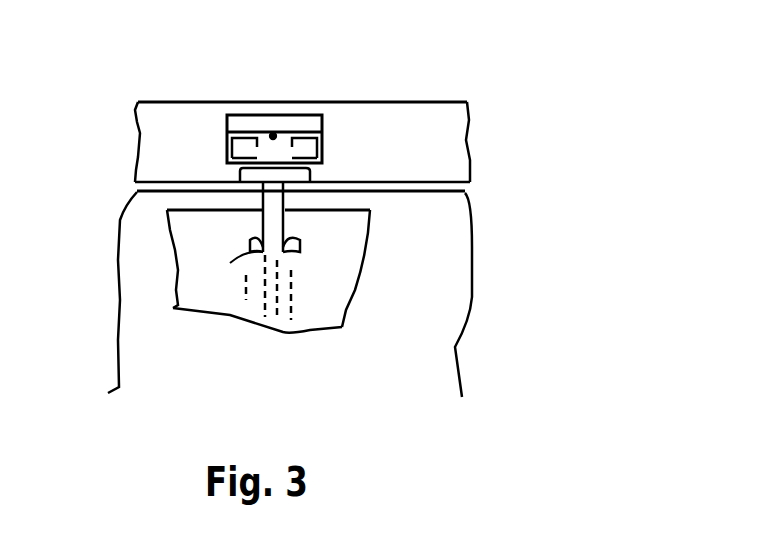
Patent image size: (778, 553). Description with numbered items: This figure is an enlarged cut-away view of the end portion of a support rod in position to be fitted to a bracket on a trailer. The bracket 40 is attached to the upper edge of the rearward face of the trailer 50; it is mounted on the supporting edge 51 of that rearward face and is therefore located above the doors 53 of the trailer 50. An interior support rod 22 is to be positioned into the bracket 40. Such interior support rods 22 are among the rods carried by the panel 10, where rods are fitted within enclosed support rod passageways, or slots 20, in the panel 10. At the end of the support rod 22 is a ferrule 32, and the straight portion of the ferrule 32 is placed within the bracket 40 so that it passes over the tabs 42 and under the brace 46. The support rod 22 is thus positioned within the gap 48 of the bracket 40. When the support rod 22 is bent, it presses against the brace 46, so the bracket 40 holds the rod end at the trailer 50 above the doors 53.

The panel 10 is at (335, 292).
The slots 20 is at (300, 259).
The interior support rod 22 is at (248, 257).
The ferrule 32 is at (355, 194).
The bracket 40 is at (280, 120).
The tabs 42 is at (234, 147).
The brace 46 is at (263, 126).
The gap 48 is at (250, 126).
The trailer 50 is at (150, 343).
The supporting edge 51 is at (436, 142).
The doors 53 is at (363, 384).